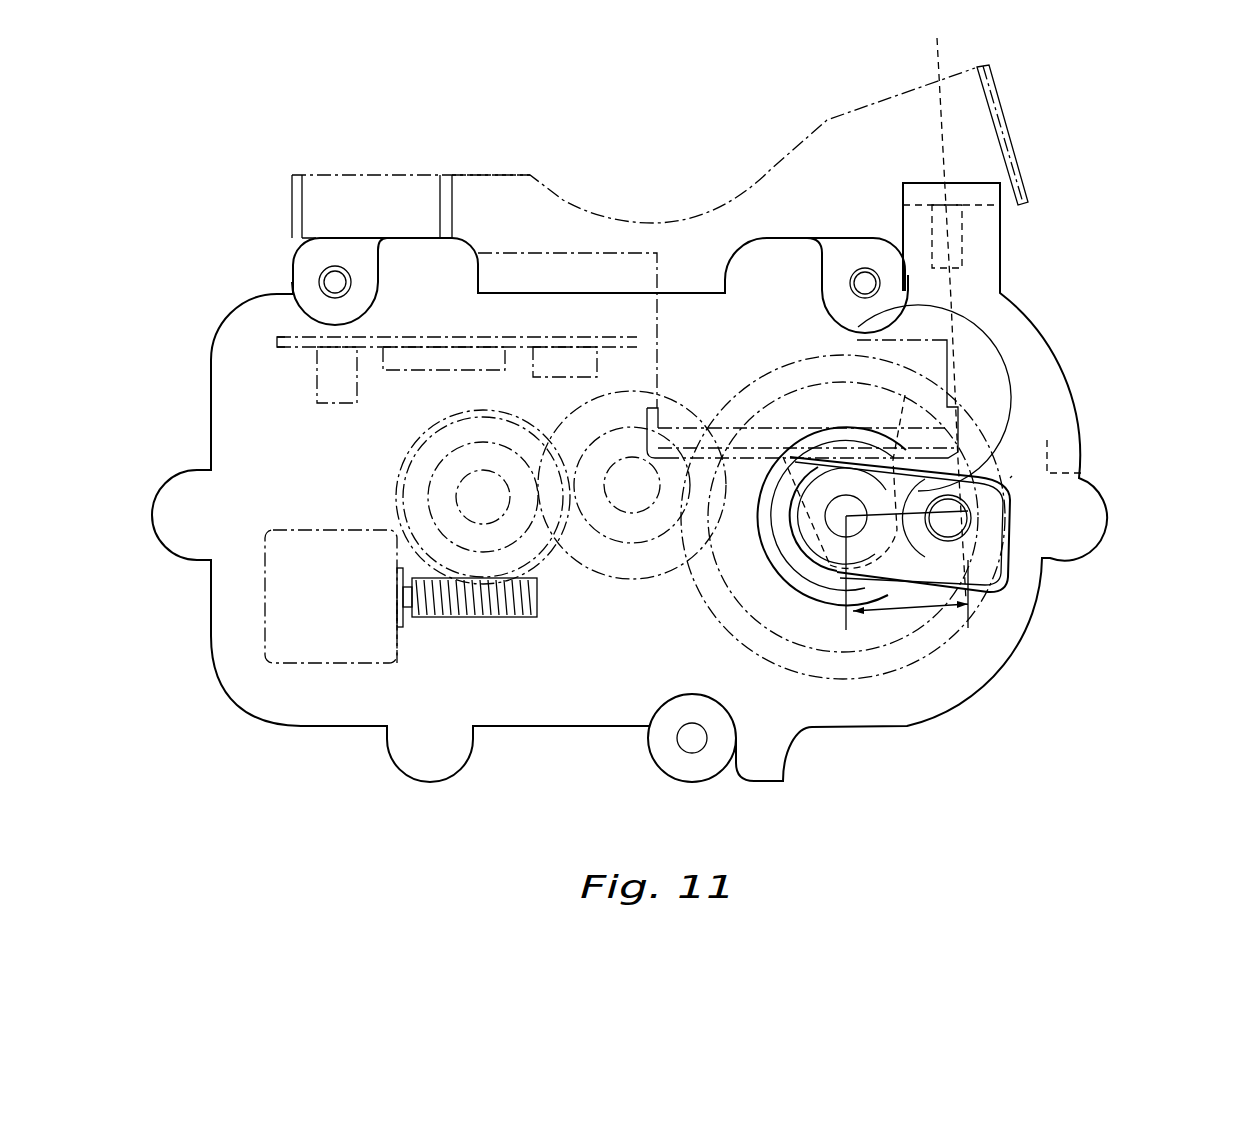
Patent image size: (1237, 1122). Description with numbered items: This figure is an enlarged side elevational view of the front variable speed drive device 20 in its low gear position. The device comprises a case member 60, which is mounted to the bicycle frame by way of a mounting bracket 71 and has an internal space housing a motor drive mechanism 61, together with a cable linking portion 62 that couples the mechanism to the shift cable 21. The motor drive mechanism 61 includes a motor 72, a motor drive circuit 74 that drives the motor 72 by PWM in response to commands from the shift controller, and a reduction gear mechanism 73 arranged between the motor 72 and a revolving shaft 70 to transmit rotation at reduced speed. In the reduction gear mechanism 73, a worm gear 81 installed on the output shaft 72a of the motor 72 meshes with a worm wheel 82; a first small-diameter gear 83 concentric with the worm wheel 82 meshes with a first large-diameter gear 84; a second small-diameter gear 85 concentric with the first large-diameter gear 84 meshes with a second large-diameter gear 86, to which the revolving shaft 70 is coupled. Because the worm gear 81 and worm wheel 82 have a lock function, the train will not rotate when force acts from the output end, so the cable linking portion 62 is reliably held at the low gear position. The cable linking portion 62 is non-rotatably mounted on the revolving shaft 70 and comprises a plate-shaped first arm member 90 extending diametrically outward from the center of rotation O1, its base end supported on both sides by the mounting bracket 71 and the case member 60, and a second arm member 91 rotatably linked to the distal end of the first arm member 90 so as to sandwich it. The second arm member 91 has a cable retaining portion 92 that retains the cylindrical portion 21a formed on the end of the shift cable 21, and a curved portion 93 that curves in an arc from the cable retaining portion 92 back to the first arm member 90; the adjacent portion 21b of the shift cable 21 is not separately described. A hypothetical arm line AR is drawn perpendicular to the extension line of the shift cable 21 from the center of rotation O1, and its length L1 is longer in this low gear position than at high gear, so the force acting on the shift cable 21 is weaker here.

The front variable speed drive device 20 is at (584, 737).
The shift cable 21 is at (947, 62).
The cylindrical portion 21a is at (963, 248).
The cable end 21b is at (1050, 435).
The case member 60 is at (967, 687).
The motor drive mechanism 61 is at (470, 705).
The cable linking portion 62 is at (1016, 578).
The revolving shaft 70 is at (838, 530).
The mounting bracket 71 is at (1018, 185).
The motor 72 is at (317, 665).
The output shaft 72a is at (397, 667).
The reduction gear mechanism 73 is at (578, 600).
The motor drive circuit 74 is at (283, 336).
The worm gear 81 is at (408, 640).
The worm wheel 82 is at (400, 505).
The first small-diameter gear 83 is at (442, 462).
The first large-diameter gear 84 is at (633, 585).
The second small-diameter gear 85 is at (660, 545).
The second large-diameter gear 86 is at (717, 570).
The first arm member 90 is at (940, 577).
The second arm member 91 is at (1047, 303).
The cable retaining portion 92 is at (878, 272).
The curved portion 93 is at (1062, 388).
The center of rotation O1 is at (846, 516).
The offset distance L1 is at (907, 605).
The hypothetical arm line AR is at (1012, 476).